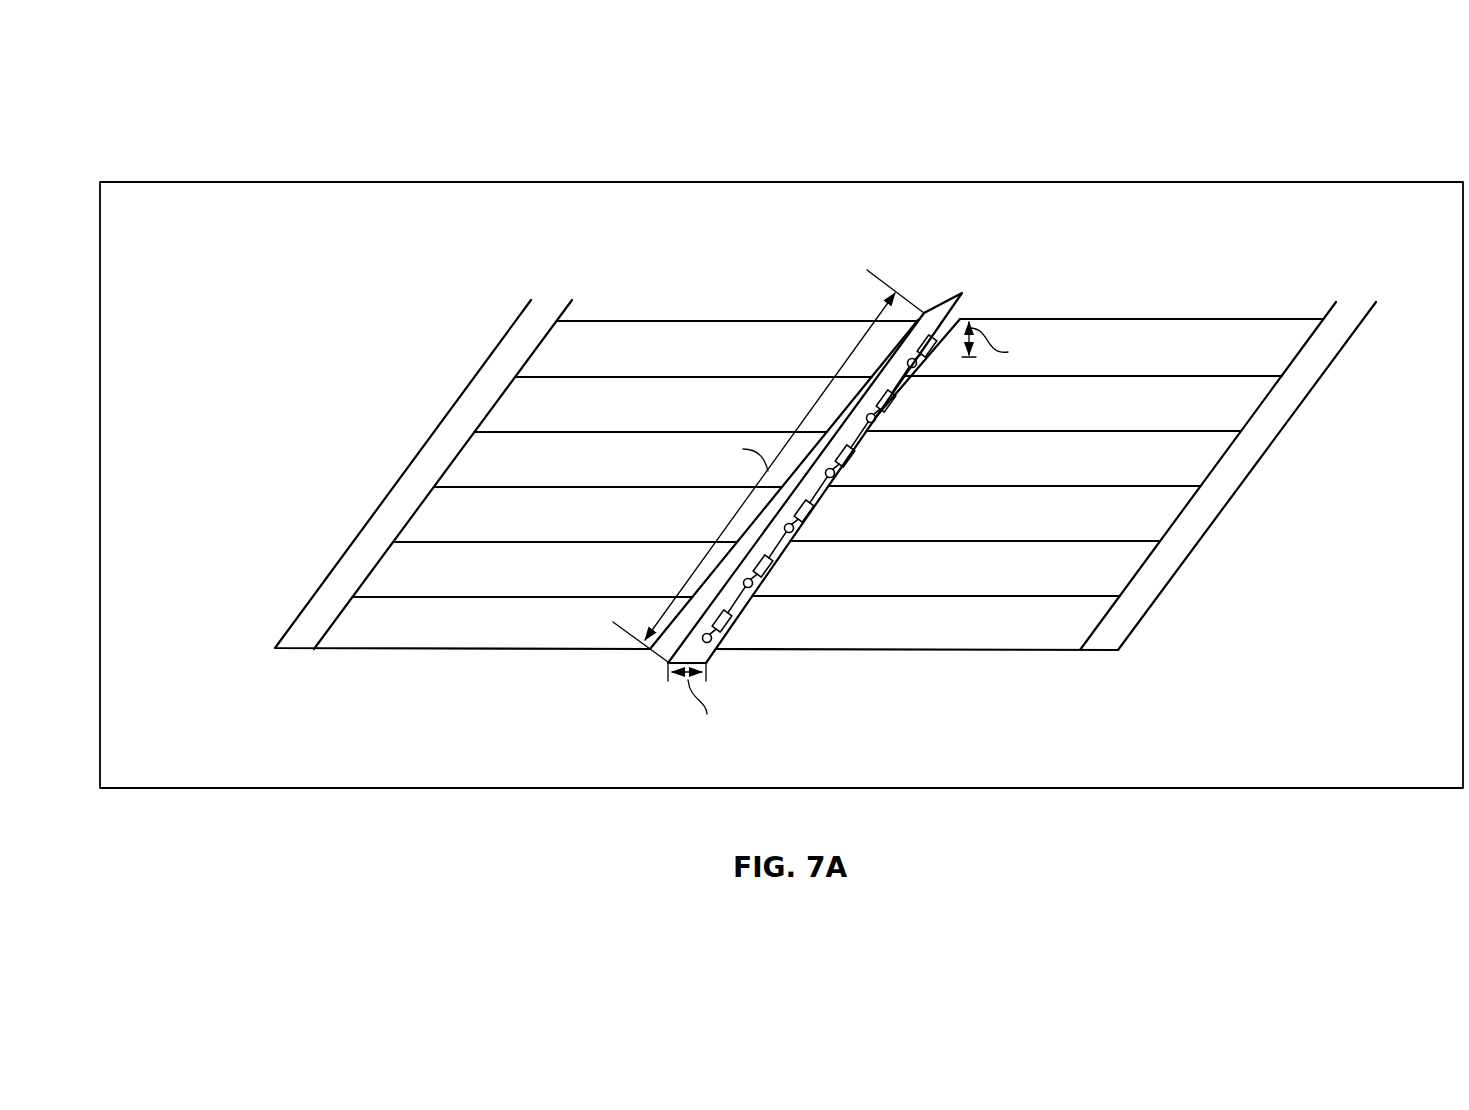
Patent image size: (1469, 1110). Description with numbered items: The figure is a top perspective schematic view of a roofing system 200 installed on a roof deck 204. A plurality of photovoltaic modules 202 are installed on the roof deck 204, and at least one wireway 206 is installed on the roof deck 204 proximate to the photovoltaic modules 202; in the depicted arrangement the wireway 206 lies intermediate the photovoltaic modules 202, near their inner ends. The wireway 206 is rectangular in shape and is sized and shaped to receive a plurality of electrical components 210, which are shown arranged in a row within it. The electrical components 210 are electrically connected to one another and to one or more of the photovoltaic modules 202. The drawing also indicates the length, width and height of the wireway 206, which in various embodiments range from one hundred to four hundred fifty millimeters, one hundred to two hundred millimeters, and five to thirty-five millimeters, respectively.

The roofing system 200 is at (895, 102).
The photovoltaic modules 202 is at (556, 353).
The roof deck 204 is at (257, 218).
The wireway 206 is at (1350, 303).
The electrical component 210 is at (726, 626).